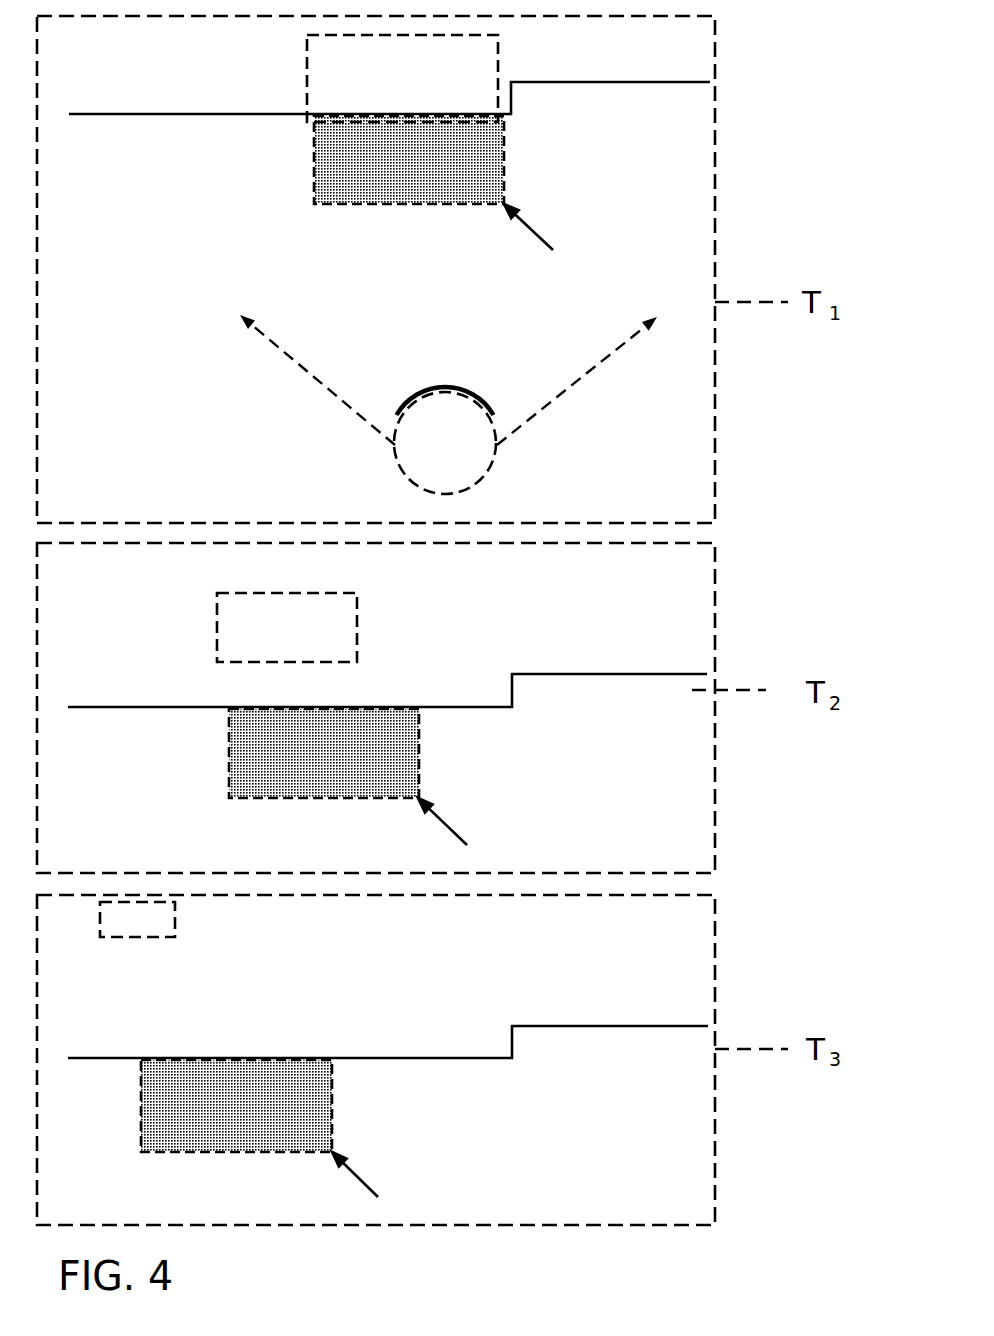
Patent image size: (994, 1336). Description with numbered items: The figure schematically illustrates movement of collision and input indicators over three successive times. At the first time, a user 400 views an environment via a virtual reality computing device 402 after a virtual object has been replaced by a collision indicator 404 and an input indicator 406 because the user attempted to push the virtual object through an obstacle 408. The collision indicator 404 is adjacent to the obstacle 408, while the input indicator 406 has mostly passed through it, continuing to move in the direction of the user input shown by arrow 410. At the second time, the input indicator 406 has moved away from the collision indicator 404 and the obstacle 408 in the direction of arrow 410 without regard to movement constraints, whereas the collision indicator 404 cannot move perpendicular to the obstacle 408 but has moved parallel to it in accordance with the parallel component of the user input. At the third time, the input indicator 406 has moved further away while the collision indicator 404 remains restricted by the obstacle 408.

The user 400 is at (429, 454).
The virtual reality computing device 402 is at (423, 391).
The collision indicator 404 is at (380, 206).
The input indicator 406 is at (307, 37).
The obstacle 408 is at (197, 115).
The arrow 410 is at (545, 236).